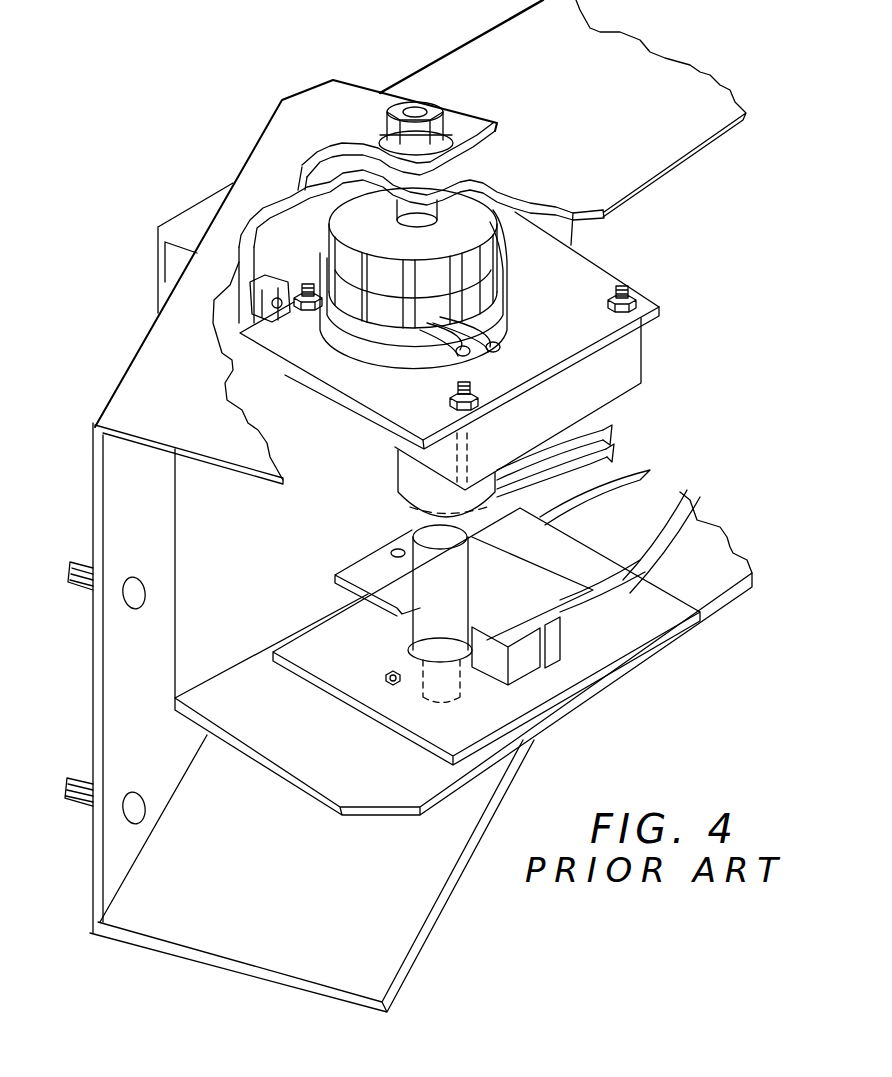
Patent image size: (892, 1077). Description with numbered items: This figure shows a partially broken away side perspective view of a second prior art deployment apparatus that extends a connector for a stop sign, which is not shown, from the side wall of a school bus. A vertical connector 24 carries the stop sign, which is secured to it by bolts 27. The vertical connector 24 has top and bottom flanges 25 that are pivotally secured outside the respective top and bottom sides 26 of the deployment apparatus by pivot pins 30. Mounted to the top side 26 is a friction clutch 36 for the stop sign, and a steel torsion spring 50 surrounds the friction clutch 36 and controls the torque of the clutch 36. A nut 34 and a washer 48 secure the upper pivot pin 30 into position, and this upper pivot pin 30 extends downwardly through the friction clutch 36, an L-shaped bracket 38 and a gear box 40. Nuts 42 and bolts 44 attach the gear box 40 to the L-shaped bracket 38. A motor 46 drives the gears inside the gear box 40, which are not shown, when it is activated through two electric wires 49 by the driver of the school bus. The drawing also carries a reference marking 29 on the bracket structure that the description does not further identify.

The vertical connector 24 is at (160, 639).
The top and bottom flanges 25 is at (128, 386).
The top and bottom sides 26 is at (376, 795).
The bolts 27 is at (72, 566).
The sheet metal bracket 29 is at (168, 265).
The pivot pins 30 is at (405, 112).
The nut 34 is at (430, 97).
The friction clutch 36 is at (392, 322).
The L-shaped bracket 38 is at (259, 337).
The gear box 40 is at (636, 346).
The nuts 42 is at (312, 312).
The bolts 44 is at (308, 283).
The motor 46 is at (410, 482).
The washer 48 is at (382, 133).
The electric wires 49 is at (614, 433).
The steel torsion spring 50 is at (507, 292).